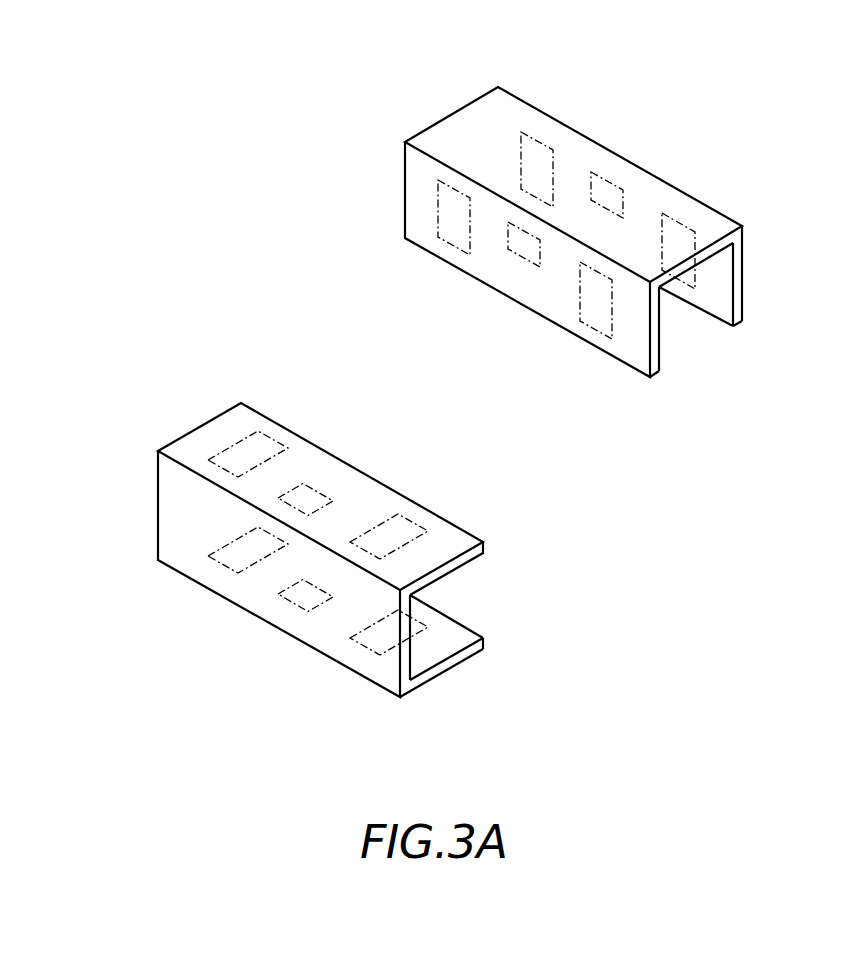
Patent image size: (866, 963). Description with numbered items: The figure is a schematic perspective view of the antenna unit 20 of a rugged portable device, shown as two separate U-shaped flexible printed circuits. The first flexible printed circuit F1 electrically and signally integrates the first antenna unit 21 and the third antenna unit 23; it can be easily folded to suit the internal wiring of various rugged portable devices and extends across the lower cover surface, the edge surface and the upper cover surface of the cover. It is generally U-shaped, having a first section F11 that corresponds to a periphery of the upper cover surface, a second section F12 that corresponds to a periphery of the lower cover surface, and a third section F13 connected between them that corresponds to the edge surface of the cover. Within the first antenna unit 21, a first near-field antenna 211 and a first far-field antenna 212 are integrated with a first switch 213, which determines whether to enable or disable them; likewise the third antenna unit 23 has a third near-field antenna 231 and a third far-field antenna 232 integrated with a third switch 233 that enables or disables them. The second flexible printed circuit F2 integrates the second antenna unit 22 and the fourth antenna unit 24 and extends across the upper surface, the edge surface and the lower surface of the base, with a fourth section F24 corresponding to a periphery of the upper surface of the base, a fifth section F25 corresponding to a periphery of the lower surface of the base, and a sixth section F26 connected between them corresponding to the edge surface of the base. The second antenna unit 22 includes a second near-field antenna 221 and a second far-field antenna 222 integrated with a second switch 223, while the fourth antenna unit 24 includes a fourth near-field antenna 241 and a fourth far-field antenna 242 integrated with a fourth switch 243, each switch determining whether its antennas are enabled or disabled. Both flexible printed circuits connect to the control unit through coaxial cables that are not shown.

The antenna unit 20 is at (92, 106).
The first flexible printed circuit F1 is at (451, 121).
The second flexible printed circuit F2 is at (160, 501).
The first antenna unit 21 is at (418, 195).
The second antenna unit 22 is at (212, 433).
The third antenna unit 23 is at (735, 285).
The fourth antenna unit 24 is at (448, 663).
The first near-field antenna 211 is at (597, 293).
The first far-field antenna 212 is at (455, 223).
The first switch 213 is at (525, 252).
The second near-field antenna 221 is at (387, 540).
The second far-field antenna 222 is at (252, 455).
The second switch 223 is at (310, 500).
The third near-field antenna 231 is at (680, 225).
The third far-field antenna 232 is at (538, 150).
The third switch 233 is at (606, 187).
The fourth near-field antenna 241 is at (373, 645).
The fourth far-field antenna 242 is at (228, 558).
The fourth switch 243 is at (302, 600).
The first section F11 is at (739, 329).
The second section F12 is at (657, 377).
The third section F13 is at (682, 286).
The fourth section F24 is at (484, 550).
The fifth section F25 is at (484, 645).
The sixth section F26 is at (413, 618).